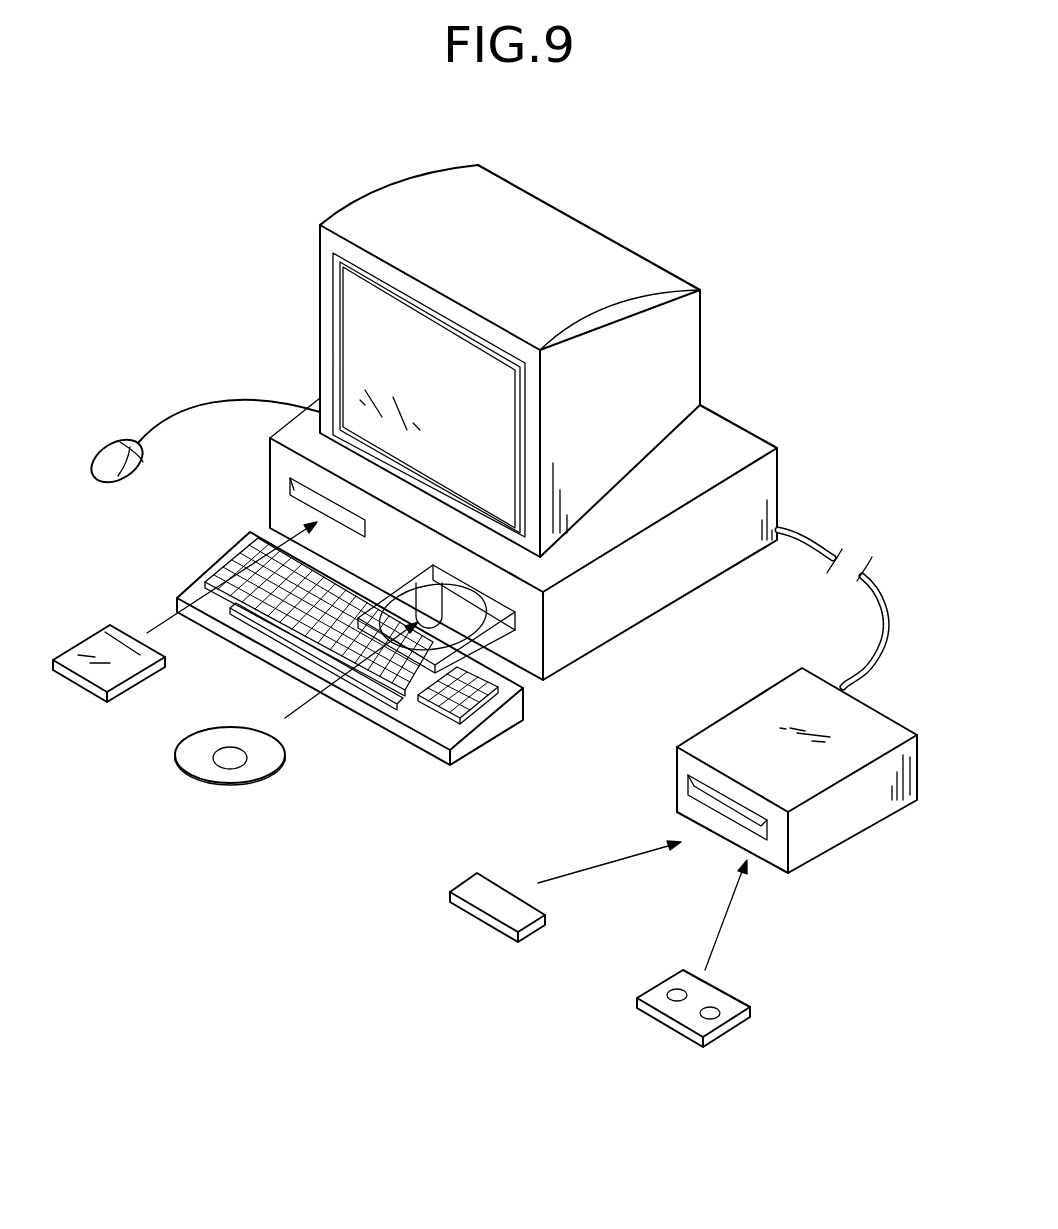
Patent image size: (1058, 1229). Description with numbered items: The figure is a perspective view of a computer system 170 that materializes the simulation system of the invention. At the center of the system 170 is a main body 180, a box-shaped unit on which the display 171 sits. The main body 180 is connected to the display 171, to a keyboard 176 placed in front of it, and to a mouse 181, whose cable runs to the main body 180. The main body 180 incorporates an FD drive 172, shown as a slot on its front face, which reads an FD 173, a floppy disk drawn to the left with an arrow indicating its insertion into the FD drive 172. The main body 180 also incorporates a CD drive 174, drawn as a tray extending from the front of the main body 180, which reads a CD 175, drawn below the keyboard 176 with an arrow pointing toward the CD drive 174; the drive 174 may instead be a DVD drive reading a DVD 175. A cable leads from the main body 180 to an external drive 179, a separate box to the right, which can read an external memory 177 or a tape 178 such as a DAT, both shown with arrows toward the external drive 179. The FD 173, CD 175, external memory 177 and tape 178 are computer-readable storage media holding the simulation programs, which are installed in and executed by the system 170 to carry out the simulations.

The computer system 170 is at (729, 228).
The display 171 is at (688, 357).
The FD drive 172 is at (297, 490).
The FD 173 is at (87, 637).
The CD drive 174 is at (513, 604).
The CD 175 is at (265, 790).
The keyboard 176 is at (485, 732).
The external memory 177 is at (478, 918).
The tape 178 is at (668, 1033).
The external drive 179 is at (845, 825).
The main body 180 is at (767, 487).
The mouse 181 is at (110, 440).